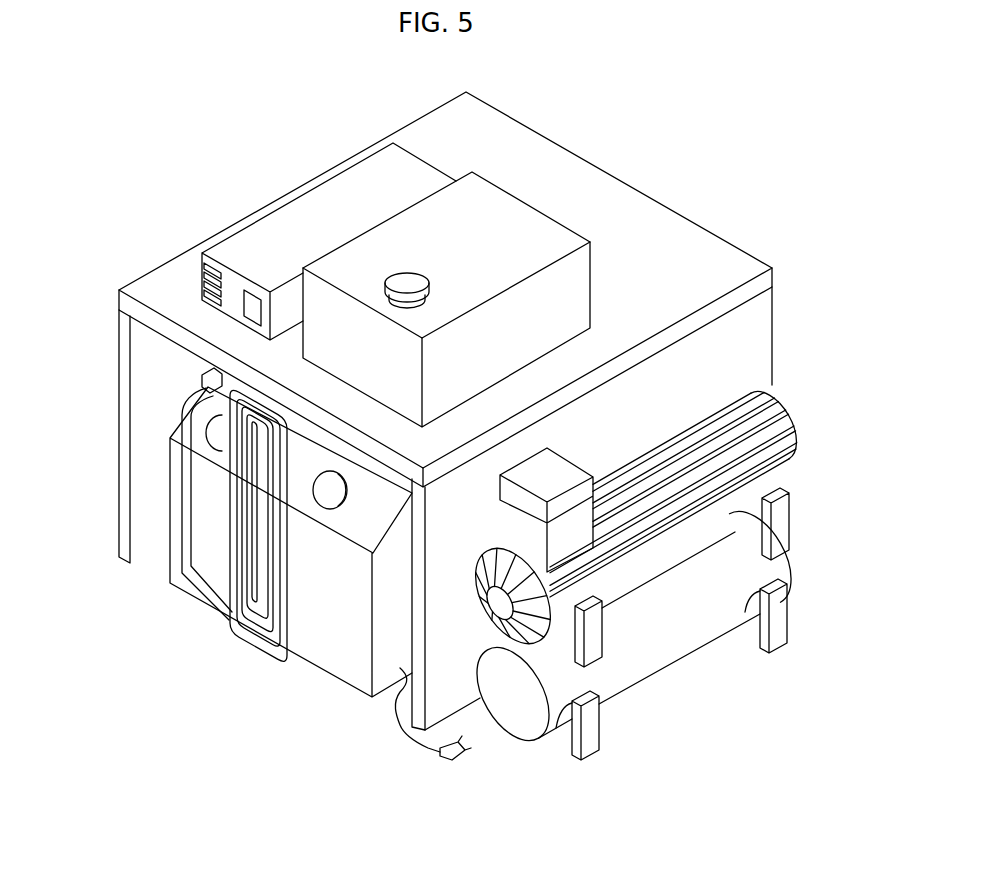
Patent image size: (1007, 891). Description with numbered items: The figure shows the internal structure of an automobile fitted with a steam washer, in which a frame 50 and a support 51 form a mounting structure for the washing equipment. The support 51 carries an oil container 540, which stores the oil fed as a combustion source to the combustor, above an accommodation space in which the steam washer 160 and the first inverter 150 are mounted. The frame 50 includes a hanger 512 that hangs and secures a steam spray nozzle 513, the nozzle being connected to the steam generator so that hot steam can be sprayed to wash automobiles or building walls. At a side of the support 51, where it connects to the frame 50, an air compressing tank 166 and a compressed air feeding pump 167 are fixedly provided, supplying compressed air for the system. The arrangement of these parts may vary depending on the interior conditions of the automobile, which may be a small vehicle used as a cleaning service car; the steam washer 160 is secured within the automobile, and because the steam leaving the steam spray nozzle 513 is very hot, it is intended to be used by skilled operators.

The frame 50 is at (118, 322).
The support 51 is at (750, 350).
The first inverter 150 is at (298, 218).
The oil container 540 is at (495, 215).
The hanger 512 is at (206, 392).
The steam spray nozzle 513 is at (232, 636).
The steam washer 160 is at (356, 668).
The air compressing tank 166 is at (790, 575).
The compressed air feeding pump 167 is at (790, 440).